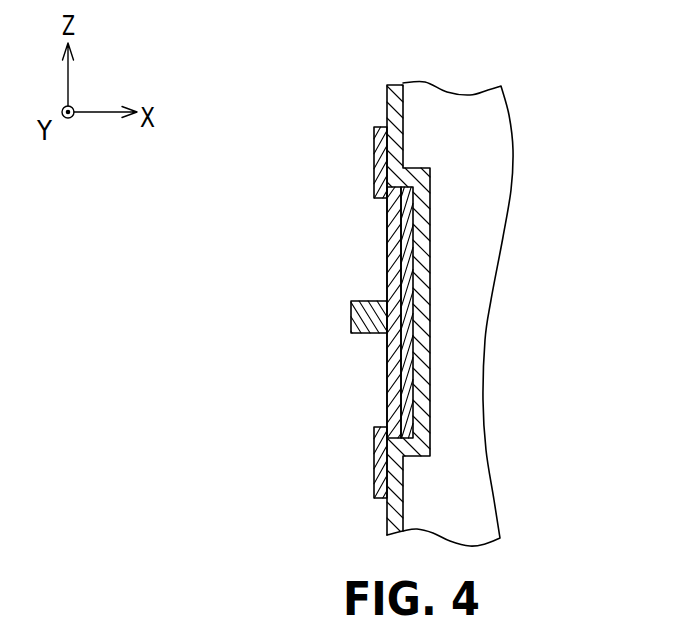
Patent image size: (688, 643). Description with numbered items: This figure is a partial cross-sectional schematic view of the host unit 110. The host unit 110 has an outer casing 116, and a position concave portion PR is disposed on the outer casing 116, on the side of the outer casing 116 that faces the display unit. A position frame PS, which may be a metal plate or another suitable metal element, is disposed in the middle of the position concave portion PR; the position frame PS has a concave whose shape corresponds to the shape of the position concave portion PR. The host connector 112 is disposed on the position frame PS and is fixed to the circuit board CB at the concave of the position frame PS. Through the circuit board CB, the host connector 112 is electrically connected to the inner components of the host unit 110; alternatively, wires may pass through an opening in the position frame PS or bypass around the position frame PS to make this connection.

The host unit 110 is at (470, 315).
The host connector 112 is at (367, 320).
The outer casing 116 is at (397, 128).
The circuit board CB is at (396, 398).
The position concave portion PR is at (413, 266).
The position frame PS is at (410, 227).